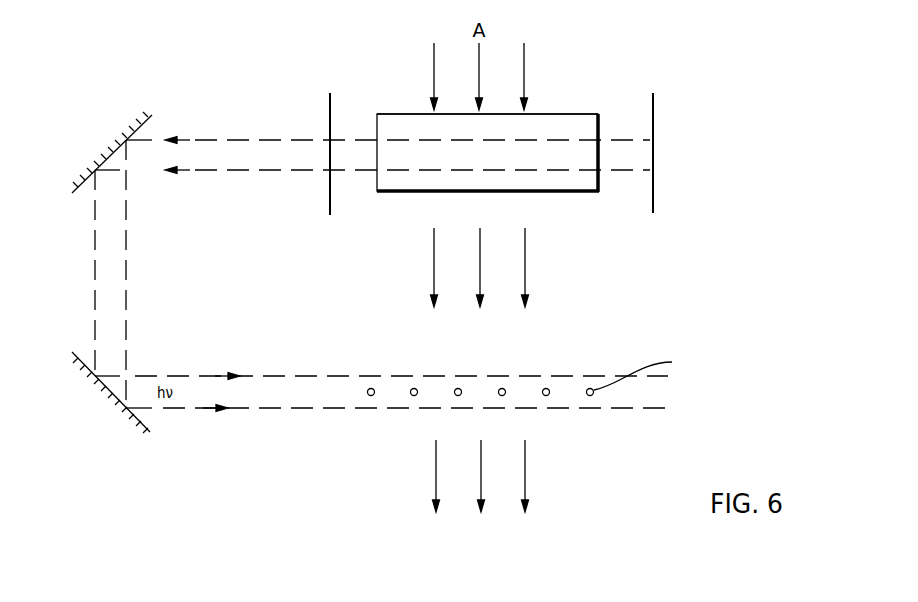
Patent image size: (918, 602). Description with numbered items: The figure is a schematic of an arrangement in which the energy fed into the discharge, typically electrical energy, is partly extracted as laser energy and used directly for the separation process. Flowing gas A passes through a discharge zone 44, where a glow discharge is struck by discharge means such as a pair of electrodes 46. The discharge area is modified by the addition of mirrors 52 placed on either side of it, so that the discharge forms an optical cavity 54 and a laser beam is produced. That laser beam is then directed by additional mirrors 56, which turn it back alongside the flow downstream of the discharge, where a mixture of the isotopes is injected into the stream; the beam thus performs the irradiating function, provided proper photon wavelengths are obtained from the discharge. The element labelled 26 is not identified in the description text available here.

The injected isotopic molecules 26 is at (547, 396).
The discharge zone 44 is at (540, 114).
The electrodes 46 is at (590, 114).
The mirrors 52 is at (330, 106).
The optical cavity 54 is at (362, 164).
The additional mirrors 56 is at (85, 178).